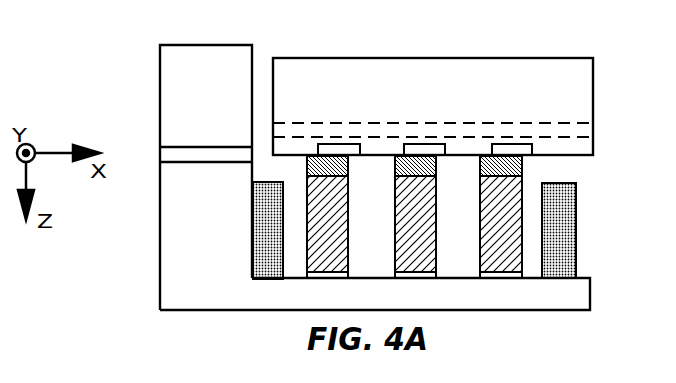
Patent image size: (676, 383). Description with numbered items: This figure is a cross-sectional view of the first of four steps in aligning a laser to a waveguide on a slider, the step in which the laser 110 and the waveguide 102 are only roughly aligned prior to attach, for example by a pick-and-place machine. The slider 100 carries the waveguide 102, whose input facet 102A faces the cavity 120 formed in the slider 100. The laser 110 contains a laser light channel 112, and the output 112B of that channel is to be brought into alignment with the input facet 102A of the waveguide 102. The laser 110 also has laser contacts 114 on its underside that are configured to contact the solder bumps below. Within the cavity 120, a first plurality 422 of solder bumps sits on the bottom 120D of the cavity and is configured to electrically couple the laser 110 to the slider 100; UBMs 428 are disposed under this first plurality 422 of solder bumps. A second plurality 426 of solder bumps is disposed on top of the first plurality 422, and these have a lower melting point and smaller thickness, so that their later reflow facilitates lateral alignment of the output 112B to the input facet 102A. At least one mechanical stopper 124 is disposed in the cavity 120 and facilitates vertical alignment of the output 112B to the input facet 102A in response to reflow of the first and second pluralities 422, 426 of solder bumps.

The slider 100 is at (190, 263).
The waveguide 102 is at (173, 155).
The input facet 102A is at (252, 157).
The laser 110 is at (563, 75).
The laser light channel 112 is at (573, 128).
The output 112B is at (285, 127).
The laser contacts 114 is at (332, 152).
The cavity 120 is at (418, 166).
The bottom of the cavity 120D is at (535, 280).
The mechanical stopper 124 is at (572, 262).
The first plurality of solder bumps 422 is at (420, 267).
The second plurality of solder bumps 426 is at (398, 160).
The UBMs 428 is at (437, 276).